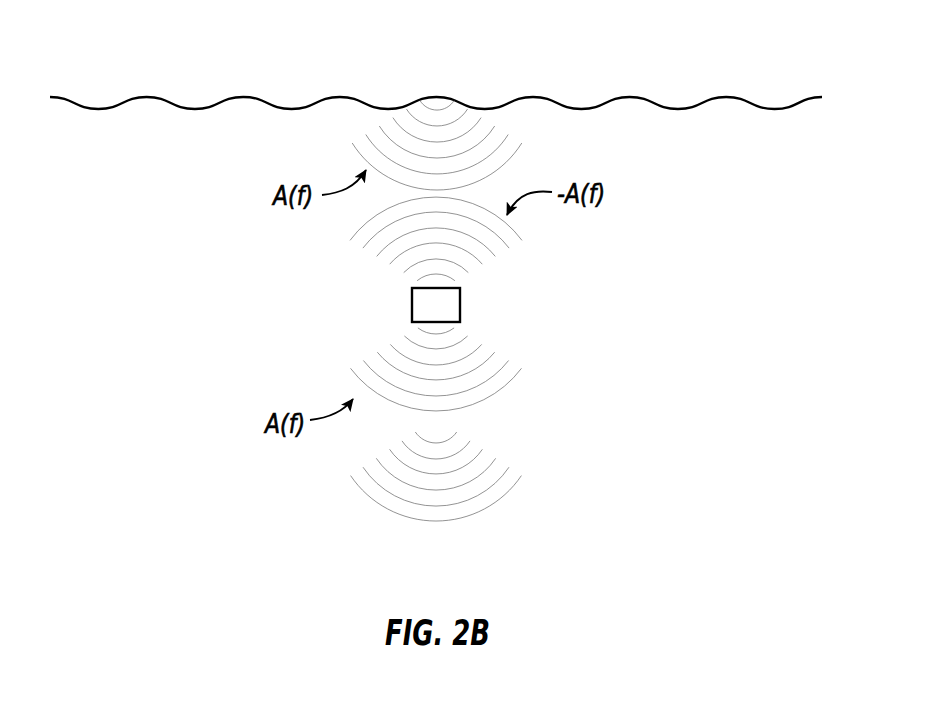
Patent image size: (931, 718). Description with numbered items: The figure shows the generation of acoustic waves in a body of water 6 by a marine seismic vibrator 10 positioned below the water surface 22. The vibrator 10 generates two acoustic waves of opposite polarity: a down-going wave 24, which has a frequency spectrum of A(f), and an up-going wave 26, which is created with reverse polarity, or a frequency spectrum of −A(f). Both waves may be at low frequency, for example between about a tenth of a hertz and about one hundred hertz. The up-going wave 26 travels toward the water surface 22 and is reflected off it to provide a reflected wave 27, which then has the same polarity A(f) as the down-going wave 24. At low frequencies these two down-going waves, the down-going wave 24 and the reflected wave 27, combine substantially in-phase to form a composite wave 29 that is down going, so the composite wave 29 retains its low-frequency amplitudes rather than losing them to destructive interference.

The water surface 22 is at (243, 96).
The reflected wave 27 is at (423, 122).
The body of water 6 is at (196, 220).
The up-going wave 26 is at (388, 248).
The marine seismic vibrator 10 is at (412, 302).
The down-going wave 24 is at (493, 393).
The composite wave 29 is at (375, 500).